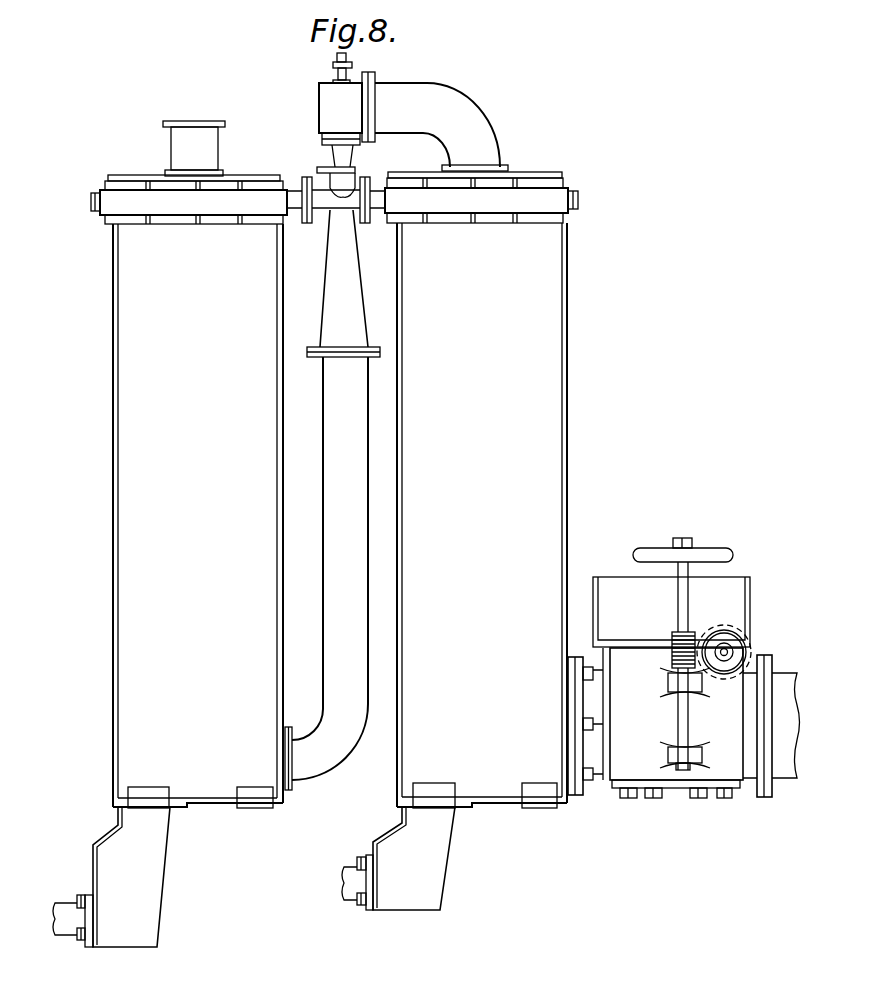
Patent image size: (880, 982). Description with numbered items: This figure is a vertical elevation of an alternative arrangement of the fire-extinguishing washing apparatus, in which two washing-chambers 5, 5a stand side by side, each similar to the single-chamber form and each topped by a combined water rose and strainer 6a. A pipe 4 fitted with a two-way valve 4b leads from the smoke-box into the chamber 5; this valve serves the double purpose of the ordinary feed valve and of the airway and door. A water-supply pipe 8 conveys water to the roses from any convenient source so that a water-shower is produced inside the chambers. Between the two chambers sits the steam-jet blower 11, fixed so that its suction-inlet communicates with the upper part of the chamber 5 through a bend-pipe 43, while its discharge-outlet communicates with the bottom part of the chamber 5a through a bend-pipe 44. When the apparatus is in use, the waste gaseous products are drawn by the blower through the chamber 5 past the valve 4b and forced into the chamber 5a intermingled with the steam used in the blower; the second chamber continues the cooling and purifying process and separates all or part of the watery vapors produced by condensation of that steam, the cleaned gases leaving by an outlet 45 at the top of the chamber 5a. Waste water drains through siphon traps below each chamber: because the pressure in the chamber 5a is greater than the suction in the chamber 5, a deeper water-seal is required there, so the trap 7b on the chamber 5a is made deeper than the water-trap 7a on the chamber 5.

The pipe 4 is at (786, 725).
The two-way valve 4b is at (670, 668).
The washing-chamber 5 is at (482, 515).
The second washing-chamber 5a is at (198, 516).
The combined water rose and strainer 6a is at (334, 198).
The water-trap 7a is at (398, 858).
The trap 7b is at (111, 877).
The water-supply pipe 8 is at (336, 138).
The steam-jet blower 11 is at (343, 283).
The bend-pipe 43 is at (441, 127).
The bend-pipe 44 is at (326, 573).
The outlet 45 is at (194, 148).